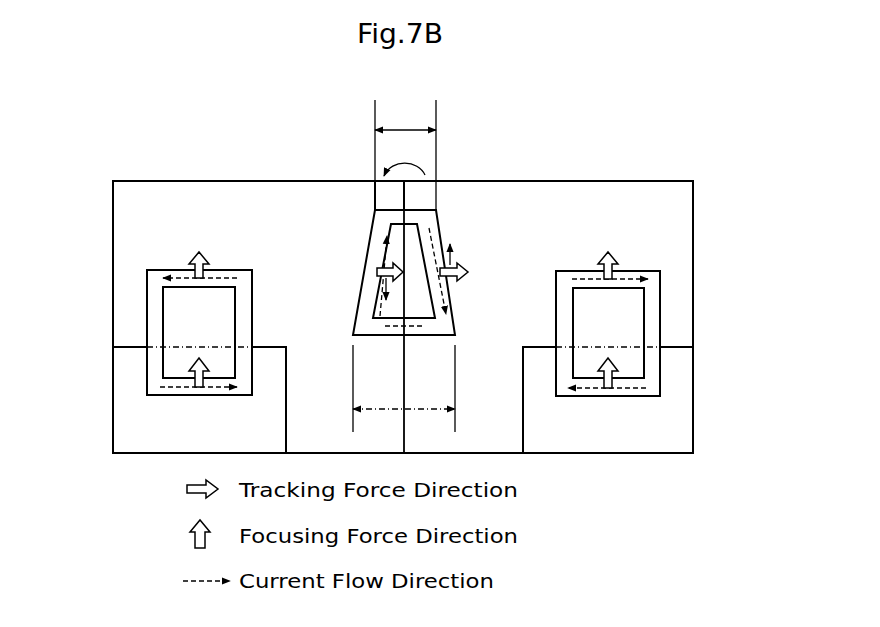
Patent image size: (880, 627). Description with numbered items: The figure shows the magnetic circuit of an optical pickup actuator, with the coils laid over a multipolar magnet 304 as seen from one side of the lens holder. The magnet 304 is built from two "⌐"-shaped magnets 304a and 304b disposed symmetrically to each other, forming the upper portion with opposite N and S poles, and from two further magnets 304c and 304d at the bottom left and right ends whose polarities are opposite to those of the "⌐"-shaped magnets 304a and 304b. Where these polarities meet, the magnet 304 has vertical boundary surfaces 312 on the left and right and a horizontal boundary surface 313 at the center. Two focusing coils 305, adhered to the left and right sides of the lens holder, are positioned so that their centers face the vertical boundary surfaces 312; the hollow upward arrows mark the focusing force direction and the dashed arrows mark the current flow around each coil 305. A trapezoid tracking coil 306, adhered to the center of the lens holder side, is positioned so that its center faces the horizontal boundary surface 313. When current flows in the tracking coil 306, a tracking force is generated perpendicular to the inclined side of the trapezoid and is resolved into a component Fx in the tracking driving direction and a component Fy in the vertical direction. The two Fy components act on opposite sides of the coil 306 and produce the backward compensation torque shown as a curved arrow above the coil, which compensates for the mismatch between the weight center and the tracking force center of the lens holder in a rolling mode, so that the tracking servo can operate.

The multipolar magnet 304 is at (716, 168).
The "⌐"-shaped magnet 304a is at (218, 200).
The "⌐"-shaped magnet 304b is at (596, 198).
The magnet 304c is at (125, 412).
The magnet 304d is at (672, 416).
The focusing coil 305 is at (153, 325).
The tracking coil 306 is at (437, 216).
The vertical boundary surface 312 is at (120, 349).
The horizontal boundary surface 313 is at (402, 195).